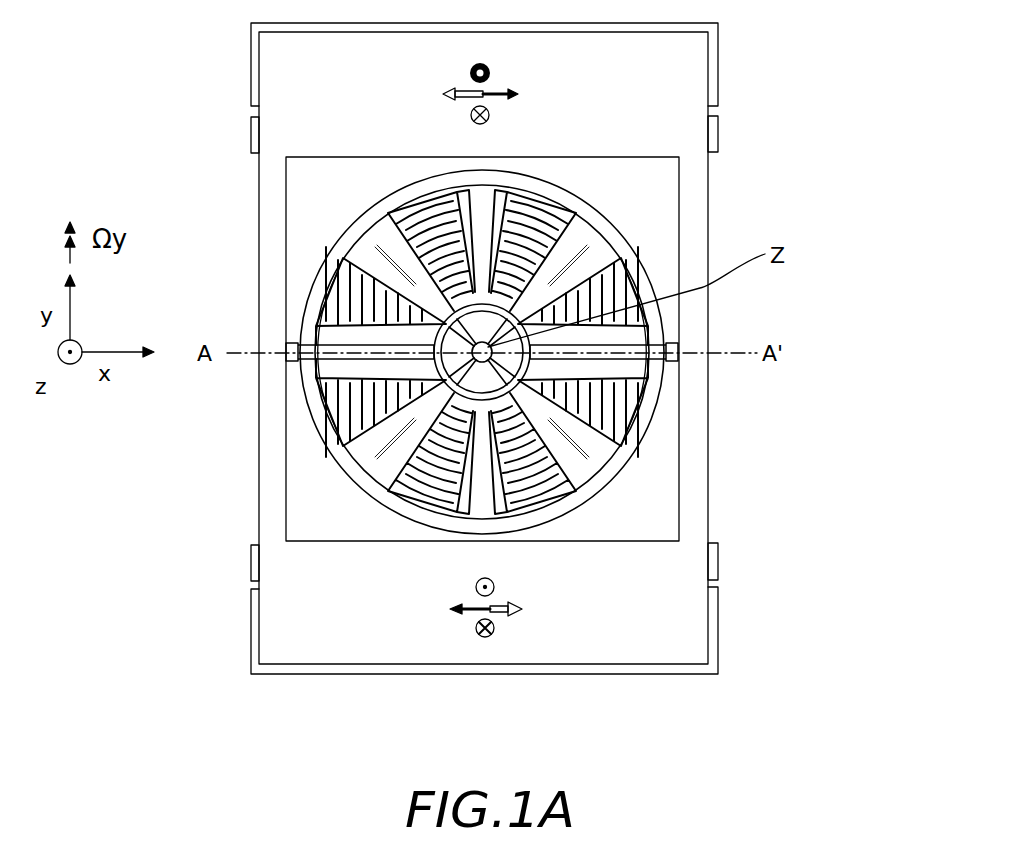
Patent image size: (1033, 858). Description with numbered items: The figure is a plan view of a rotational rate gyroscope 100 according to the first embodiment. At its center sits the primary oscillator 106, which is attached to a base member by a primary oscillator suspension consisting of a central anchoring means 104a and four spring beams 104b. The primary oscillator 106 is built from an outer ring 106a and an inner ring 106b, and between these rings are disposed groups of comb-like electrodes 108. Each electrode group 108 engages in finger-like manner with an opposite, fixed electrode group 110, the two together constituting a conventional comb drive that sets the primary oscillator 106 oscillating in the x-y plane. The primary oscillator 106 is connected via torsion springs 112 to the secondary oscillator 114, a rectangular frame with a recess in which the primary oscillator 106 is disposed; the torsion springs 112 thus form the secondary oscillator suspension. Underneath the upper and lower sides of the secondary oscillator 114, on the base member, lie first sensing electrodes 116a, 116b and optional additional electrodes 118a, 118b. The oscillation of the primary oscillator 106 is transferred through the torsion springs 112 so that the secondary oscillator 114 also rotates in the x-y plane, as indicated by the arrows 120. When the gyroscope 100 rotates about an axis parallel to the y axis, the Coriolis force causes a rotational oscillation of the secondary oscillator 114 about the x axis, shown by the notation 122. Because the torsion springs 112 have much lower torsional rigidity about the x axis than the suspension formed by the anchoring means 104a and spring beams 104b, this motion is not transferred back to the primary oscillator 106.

The rotational rate gyroscope 100 is at (569, 346).
The anchoring means 104a is at (530, 290).
The spring beams 104b is at (387, 485).
The primary oscillator 106 is at (370, 227).
The outer ring 106a is at (313, 295).
The inner ring 106b is at (640, 415).
The comb-like electrode groups 108 is at (345, 268).
The fixed electrode groups 110 is at (512, 190).
The torsion springs 112 is at (677, 345).
The secondary oscillator 114 is at (687, 92).
The first sensing electrode 116a is at (716, 52).
The first sensing electrode 116b is at (718, 612).
The additional electrode 118a is at (718, 140).
The additional electrode 118b is at (716, 562).
The arrows 120 is at (508, 613).
The notation 122 is at (483, 638).